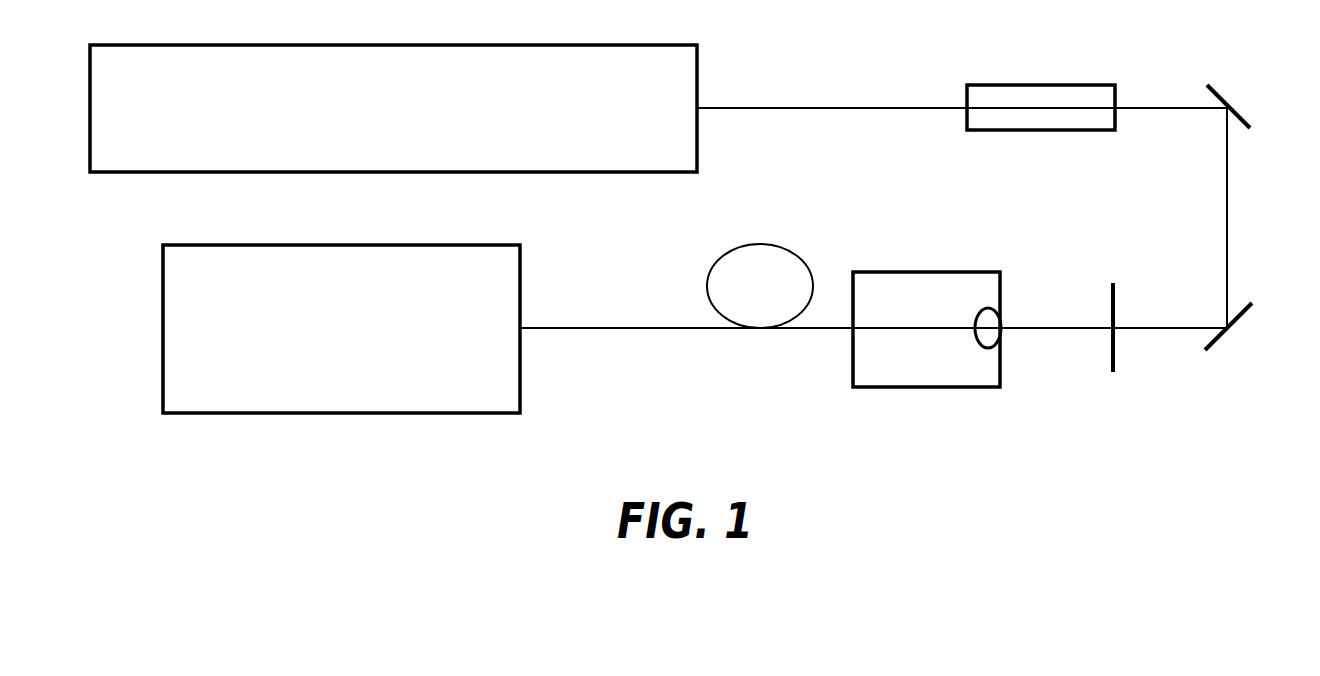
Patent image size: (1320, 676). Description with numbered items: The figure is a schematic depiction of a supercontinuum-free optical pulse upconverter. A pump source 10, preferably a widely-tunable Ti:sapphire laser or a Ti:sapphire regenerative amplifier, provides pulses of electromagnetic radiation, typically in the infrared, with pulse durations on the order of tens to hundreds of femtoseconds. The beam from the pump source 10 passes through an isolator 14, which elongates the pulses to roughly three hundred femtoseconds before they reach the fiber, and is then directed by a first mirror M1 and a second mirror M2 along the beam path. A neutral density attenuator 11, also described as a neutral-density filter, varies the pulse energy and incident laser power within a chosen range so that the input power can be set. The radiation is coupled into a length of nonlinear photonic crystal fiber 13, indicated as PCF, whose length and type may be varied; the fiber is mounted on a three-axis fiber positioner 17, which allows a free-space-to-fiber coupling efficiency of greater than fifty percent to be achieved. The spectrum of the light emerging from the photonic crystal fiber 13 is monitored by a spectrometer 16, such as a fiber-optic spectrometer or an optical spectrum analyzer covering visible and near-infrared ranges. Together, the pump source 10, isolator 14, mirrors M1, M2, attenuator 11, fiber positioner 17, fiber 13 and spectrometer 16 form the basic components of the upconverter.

The pump source 10 is at (378, 122).
The isolator 14 is at (1027, 120).
The first mirror M1 is at (1243, 96).
The spectrometer 16 is at (326, 344).
The nonlinear photonic crystal fiber 13 is at (687, 330).
The photonic crystal fiber PCF is at (760, 286).
The 3-axis fiber positioner 17 is at (902, 310).
The neutral density attenuator 11 is at (1117, 360).
The second mirror M2 is at (1243, 339).